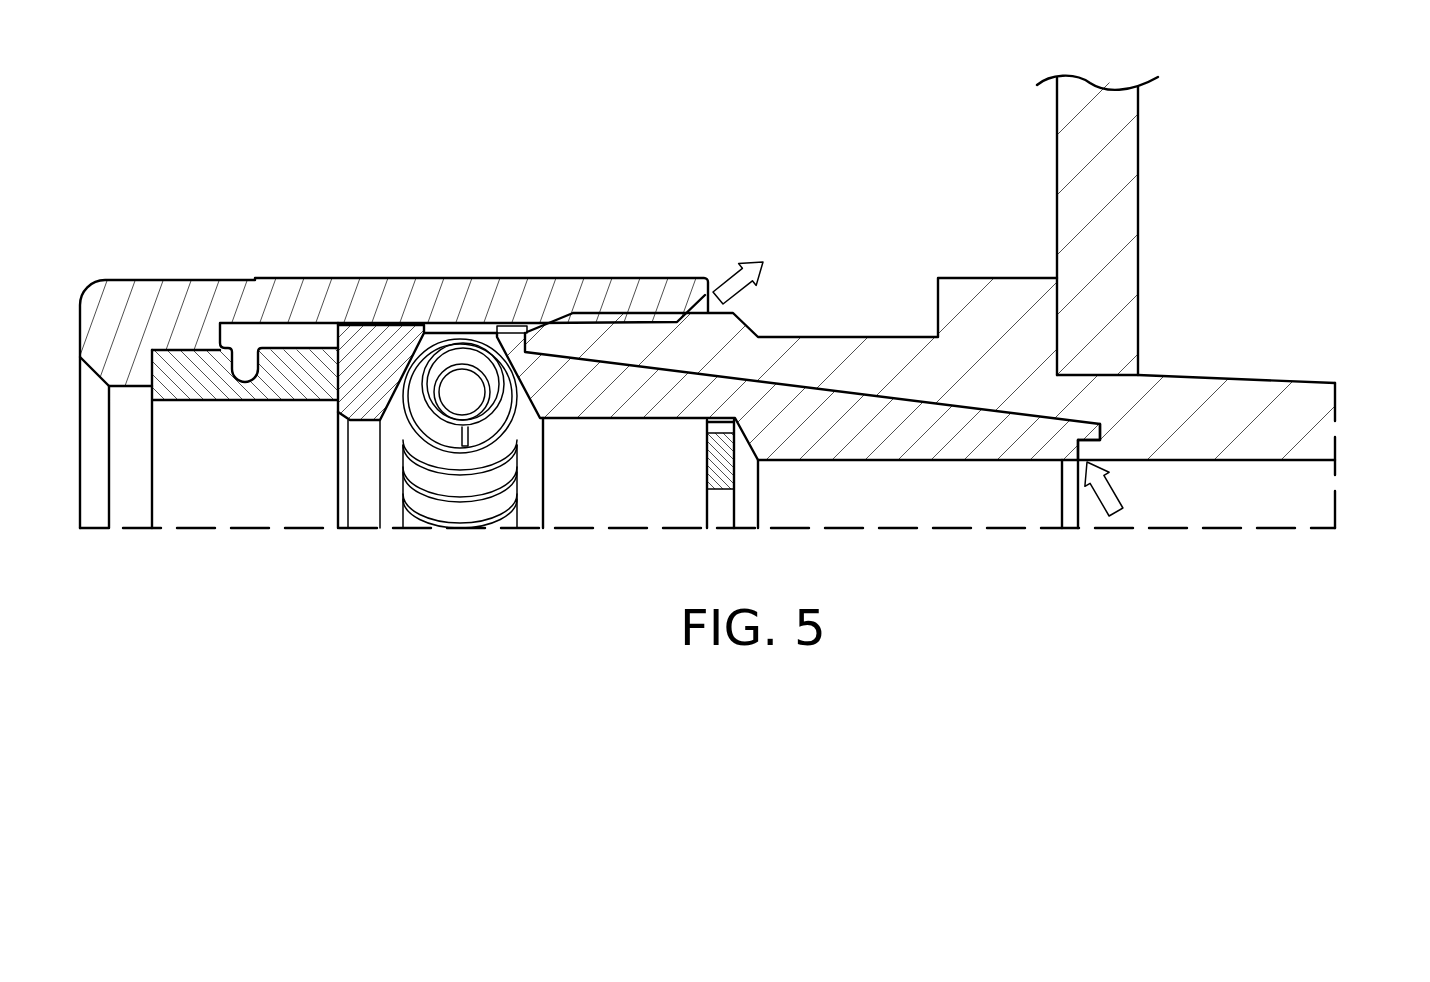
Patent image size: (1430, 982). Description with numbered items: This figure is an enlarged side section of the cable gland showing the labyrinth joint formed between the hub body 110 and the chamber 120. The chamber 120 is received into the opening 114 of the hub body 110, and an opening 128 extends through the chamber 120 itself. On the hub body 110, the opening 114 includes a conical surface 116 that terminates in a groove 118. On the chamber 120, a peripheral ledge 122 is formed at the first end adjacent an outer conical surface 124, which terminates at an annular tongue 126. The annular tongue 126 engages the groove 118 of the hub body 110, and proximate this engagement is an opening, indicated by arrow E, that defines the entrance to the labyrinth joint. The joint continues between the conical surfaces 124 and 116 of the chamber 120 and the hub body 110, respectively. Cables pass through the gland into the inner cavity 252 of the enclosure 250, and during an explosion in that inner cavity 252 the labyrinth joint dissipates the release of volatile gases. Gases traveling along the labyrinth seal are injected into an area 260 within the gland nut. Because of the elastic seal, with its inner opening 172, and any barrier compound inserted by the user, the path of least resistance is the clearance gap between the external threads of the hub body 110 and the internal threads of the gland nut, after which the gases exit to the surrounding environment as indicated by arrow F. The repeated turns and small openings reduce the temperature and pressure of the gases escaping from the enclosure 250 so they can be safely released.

The peripheral ledge 122 is at (333, 293).
The area 260 is at (533, 324).
The outer conical surface 124 is at (785, 362).
The conical surface 116 is at (862, 400).
The enclosure 250 is at (1168, 212).
The hub body 110 is at (1228, 357).
The inner cavity 252 is at (1357, 345).
The inner opening 172 is at (212, 498).
The opening 128 is at (897, 515).
The groove 118 is at (1073, 451).
The annular tongue 126 is at (1100, 430).
The opening 114 is at (1255, 513).
The chamber 120 is at (658, 428).
The arrow F is at (728, 278).
The arrow E is at (1120, 515).